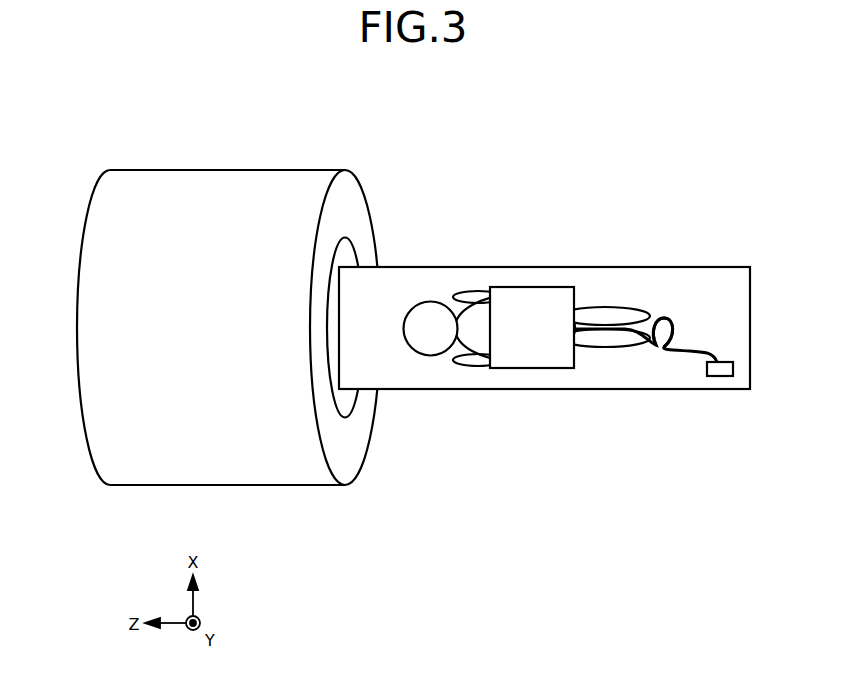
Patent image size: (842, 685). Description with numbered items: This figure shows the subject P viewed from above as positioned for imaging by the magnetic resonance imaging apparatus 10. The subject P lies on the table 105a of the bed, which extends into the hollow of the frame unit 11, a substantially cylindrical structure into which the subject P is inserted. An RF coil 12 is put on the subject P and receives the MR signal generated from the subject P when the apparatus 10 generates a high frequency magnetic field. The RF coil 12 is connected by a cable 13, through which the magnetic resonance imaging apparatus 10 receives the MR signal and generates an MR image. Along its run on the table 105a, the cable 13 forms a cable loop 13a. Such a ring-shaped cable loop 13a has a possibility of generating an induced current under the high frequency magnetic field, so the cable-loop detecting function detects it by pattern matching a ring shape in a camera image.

The magnetic resonance imaging apparatus 10 is at (356, 139).
The frame unit 11 is at (172, 170).
The RF coil 12 is at (528, 296).
The cable 13 is at (688, 354).
The cable loop 13a is at (667, 311).
The table 105a is at (606, 282).
The subject P is at (429, 300).